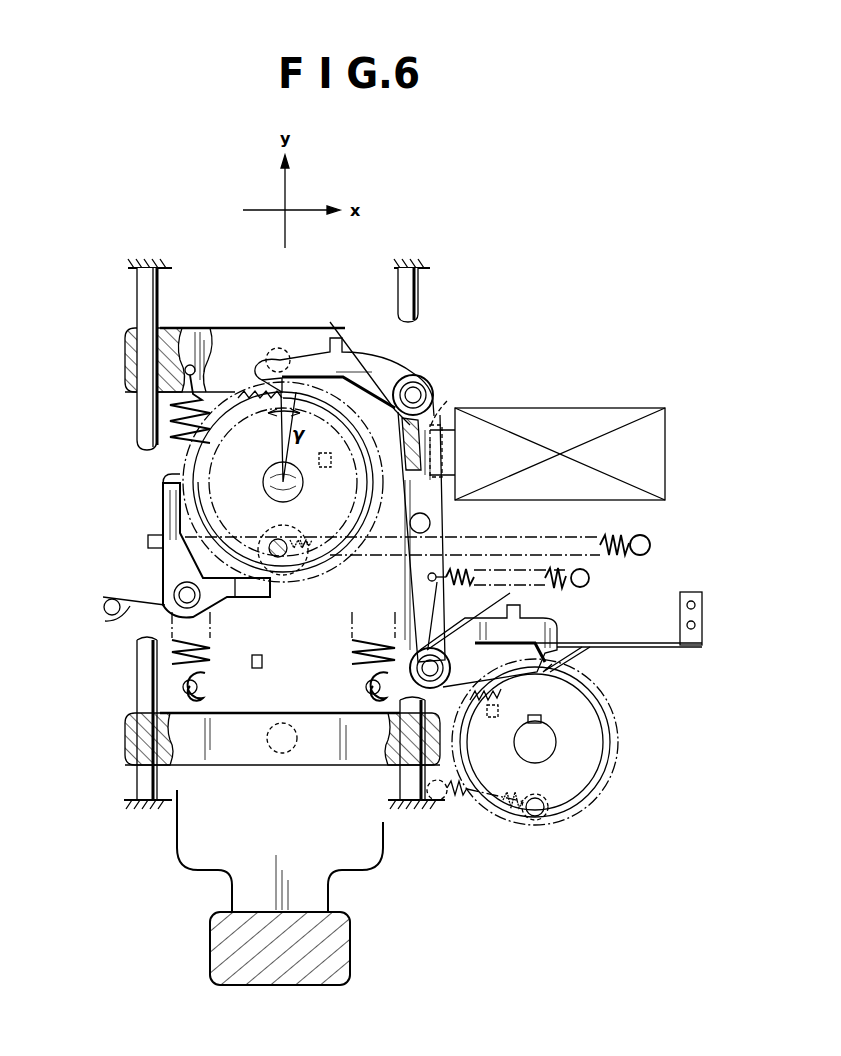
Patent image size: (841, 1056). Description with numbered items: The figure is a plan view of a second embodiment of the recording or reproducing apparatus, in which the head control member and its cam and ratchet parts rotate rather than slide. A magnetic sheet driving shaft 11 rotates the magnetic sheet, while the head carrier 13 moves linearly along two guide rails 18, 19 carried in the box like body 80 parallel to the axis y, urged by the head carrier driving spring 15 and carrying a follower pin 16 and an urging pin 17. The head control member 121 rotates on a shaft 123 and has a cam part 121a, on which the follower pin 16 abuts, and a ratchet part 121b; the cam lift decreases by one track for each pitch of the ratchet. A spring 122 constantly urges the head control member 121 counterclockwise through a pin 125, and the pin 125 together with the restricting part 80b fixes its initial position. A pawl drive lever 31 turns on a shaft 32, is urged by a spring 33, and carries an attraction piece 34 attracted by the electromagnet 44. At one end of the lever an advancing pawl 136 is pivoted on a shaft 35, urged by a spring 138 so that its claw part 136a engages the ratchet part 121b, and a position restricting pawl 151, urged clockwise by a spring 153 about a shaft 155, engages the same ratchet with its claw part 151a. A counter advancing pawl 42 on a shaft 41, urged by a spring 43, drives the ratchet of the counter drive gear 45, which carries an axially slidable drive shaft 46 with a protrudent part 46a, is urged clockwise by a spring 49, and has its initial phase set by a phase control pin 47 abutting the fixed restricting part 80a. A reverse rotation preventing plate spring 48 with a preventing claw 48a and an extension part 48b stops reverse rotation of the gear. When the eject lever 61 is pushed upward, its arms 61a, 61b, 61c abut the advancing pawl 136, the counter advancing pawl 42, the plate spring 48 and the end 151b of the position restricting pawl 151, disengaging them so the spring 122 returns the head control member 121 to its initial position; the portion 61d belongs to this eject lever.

The magnetic sheet driving shaft 11 is at (155, 535).
The head carrier 13 is at (186, 332).
The head carrier driving spring 15 is at (172, 655).
The follower pin 16 is at (278, 348).
The urging pin 17 is at (282, 753).
The guide rail 18 is at (137, 314).
The guide rail 19 is at (418, 302).
The pawl drive lever 31 is at (445, 545).
The shaft 32 is at (430, 523).
The spring 33 is at (578, 590).
The attraction piece 34 is at (448, 400).
The shaft 35 is at (424, 380).
The shaft 41 is at (442, 800).
The counter advancing pawl 42 is at (560, 640).
The spring 43 is at (525, 632).
The electromagnet 44 is at (530, 408).
The counter drive gear 45 is at (580, 782).
The drive shaft 46 is at (552, 752).
The protrudent part 46a is at (541, 718).
The phase control pin 47 is at (540, 818).
The reverse rotation preventing plate spring 48 is at (650, 652).
The preventing claw 48a is at (576, 656).
The extension part 48b is at (500, 660).
The spring 49 is at (468, 810).
The eject lever 61 is at (225, 868).
The arm 61a is at (325, 467).
The arm 61b is at (492, 717).
The arm 61c is at (255, 668).
The slider head 61d is at (350, 955).
The box like body 80 is at (146, 262).
The fixed restricting part 80a is at (515, 816).
The restricting part 80b is at (300, 562).
The head control member 121 is at (225, 400).
The cam part 121a is at (256, 405).
The ratchet part 121b is at (348, 378).
The spring 122 is at (545, 548).
The shaft 123 is at (263, 481).
The pin 125 is at (282, 575).
The advancing pawl 136 is at (398, 368).
The claw part 136a is at (284, 376).
The spring 138 is at (382, 376).
The position restricting pawl 151 is at (165, 570).
The claw part 151a is at (163, 499).
The end 151b is at (262, 600).
The spring 153 is at (119, 613).
The shaft 155 is at (174, 592).